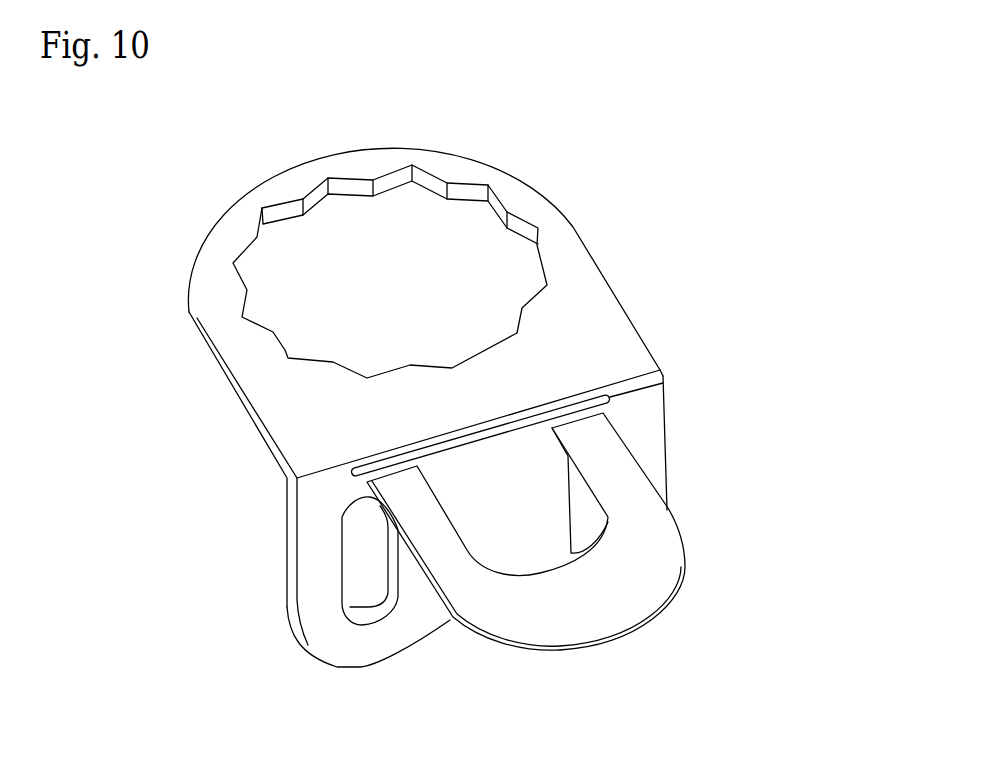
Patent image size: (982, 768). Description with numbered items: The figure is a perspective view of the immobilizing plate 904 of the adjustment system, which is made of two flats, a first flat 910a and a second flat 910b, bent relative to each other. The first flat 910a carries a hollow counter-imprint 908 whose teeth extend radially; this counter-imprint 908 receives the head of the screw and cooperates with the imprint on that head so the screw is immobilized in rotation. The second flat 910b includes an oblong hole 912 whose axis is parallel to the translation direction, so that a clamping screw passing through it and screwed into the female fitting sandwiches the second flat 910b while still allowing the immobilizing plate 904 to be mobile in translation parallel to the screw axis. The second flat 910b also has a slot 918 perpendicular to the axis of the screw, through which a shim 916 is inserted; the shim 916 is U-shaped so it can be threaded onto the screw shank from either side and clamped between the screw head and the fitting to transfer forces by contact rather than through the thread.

The immobilizing plate 904 is at (694, 298).
The hollow counter-imprint 908 is at (262, 222).
The first flat 910a is at (277, 397).
The second flat 910b is at (655, 433).
The oblong hole 912 is at (358, 572).
The shim 916 is at (660, 567).
The slot 918 is at (656, 386).